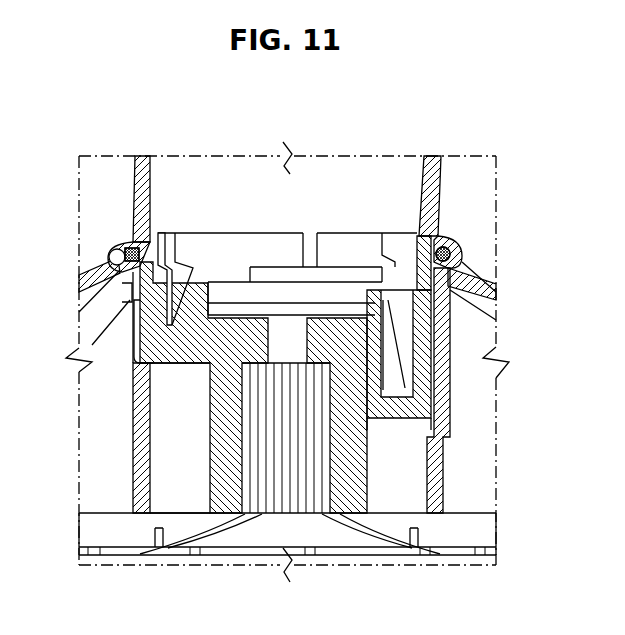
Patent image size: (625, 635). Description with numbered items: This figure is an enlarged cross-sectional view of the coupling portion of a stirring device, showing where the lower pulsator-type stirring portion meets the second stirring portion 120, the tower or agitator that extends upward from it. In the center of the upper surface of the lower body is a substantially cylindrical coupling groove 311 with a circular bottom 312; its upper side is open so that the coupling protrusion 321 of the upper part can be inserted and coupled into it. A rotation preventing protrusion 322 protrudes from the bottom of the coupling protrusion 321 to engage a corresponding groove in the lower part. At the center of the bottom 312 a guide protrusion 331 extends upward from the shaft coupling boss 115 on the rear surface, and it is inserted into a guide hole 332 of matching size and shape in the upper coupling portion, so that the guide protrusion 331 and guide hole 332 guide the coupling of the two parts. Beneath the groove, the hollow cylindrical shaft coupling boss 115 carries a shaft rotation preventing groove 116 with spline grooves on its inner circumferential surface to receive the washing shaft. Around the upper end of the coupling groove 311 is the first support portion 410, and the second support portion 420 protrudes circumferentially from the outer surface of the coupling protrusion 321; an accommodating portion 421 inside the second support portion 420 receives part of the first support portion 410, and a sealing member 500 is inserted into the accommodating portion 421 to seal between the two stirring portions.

The second stirring portion 120 is at (443, 188).
The sealing member 500 is at (452, 254).
The second support portion 420 is at (126, 249).
The accommodating portion 421 is at (110, 254).
The first support portion 410 is at (115, 266).
The coupling groove 311 is at (160, 298).
The bottom 312 is at (132, 347).
The coupling protrusion 321 is at (432, 300).
The rotation preventing protrusion 322 is at (362, 372).
The guide protrusion 331 is at (260, 335).
The guide hole 332 is at (338, 332).
The shaft coupling boss 115 is at (252, 396).
The shaft rotation preventing groove 116 is at (262, 440).